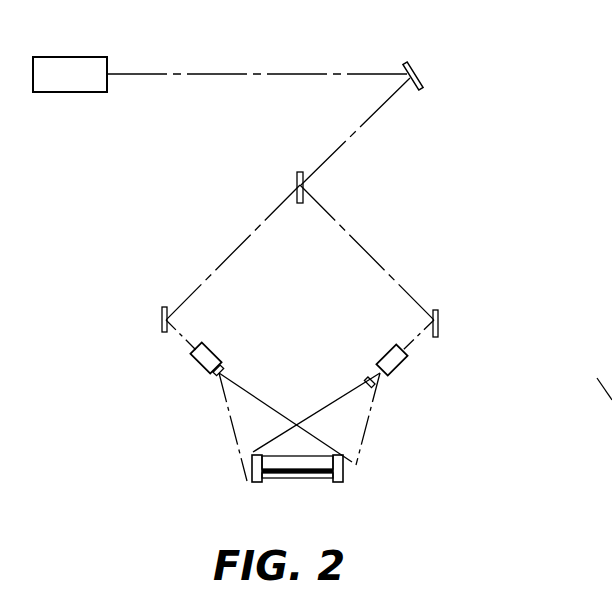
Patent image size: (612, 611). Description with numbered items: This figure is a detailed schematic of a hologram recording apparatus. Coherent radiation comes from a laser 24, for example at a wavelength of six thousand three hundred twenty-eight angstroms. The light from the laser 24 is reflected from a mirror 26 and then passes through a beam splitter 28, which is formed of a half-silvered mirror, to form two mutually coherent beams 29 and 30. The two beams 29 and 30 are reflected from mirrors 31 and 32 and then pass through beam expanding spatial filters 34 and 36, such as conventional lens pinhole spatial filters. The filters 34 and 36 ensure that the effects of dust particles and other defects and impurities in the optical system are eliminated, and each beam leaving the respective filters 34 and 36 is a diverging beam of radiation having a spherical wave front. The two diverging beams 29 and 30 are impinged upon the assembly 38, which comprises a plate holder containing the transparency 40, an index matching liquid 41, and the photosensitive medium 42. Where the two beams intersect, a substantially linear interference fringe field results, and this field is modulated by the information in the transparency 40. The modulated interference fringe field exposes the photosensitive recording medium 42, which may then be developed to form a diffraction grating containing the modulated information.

The laser 24 is at (87, 57).
The mirror 26 is at (411, 66).
The beam splitter 28 is at (298, 172).
The beam 29 is at (259, 227).
The beam 30 is at (373, 258).
The mirror 31 is at (164, 307).
The mirror 32 is at (438, 337).
The beam expanding spatial filter 34 is at (214, 351).
The beam expanding spatial filter 36 is at (389, 352).
The assembly 38 is at (283, 466).
The transparency 40 is at (313, 462).
The index matching liquid 41 is at (317, 474).
The photosensitive medium 42 is at (282, 480).